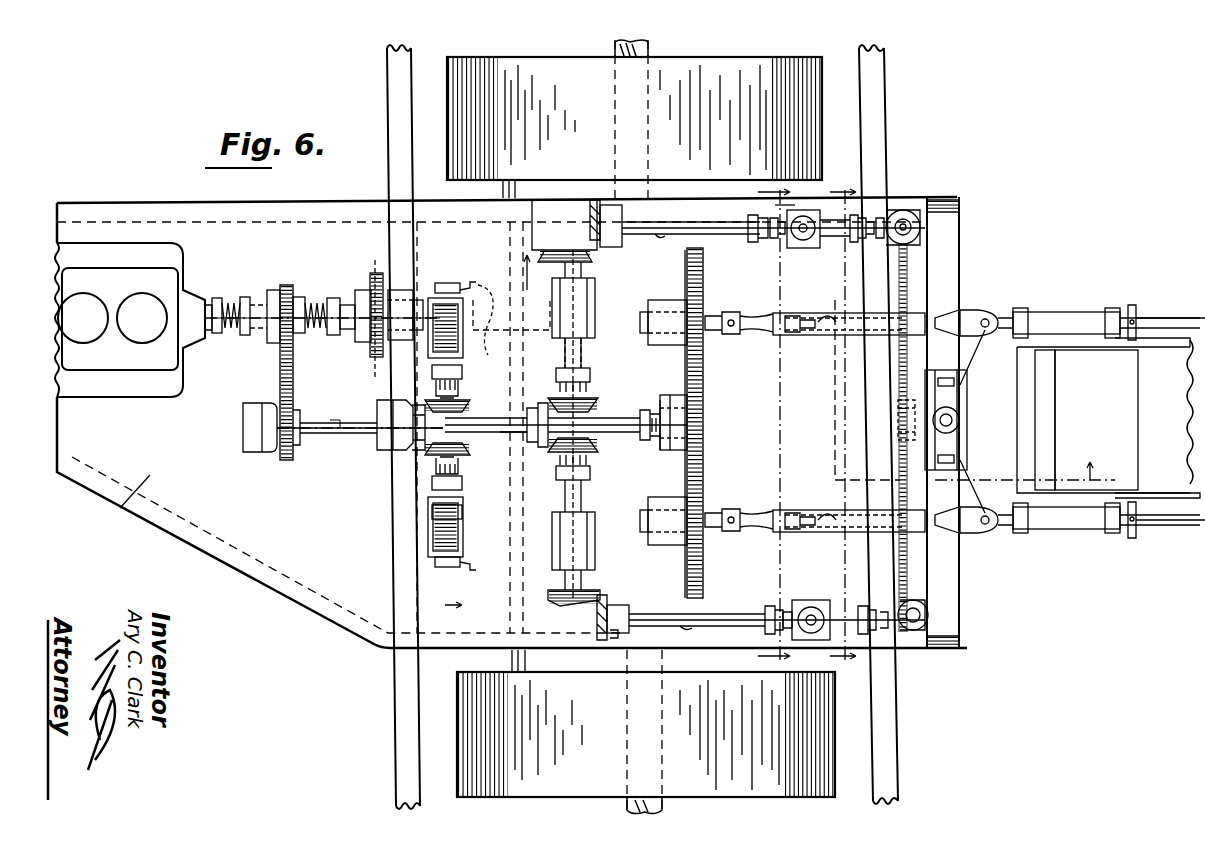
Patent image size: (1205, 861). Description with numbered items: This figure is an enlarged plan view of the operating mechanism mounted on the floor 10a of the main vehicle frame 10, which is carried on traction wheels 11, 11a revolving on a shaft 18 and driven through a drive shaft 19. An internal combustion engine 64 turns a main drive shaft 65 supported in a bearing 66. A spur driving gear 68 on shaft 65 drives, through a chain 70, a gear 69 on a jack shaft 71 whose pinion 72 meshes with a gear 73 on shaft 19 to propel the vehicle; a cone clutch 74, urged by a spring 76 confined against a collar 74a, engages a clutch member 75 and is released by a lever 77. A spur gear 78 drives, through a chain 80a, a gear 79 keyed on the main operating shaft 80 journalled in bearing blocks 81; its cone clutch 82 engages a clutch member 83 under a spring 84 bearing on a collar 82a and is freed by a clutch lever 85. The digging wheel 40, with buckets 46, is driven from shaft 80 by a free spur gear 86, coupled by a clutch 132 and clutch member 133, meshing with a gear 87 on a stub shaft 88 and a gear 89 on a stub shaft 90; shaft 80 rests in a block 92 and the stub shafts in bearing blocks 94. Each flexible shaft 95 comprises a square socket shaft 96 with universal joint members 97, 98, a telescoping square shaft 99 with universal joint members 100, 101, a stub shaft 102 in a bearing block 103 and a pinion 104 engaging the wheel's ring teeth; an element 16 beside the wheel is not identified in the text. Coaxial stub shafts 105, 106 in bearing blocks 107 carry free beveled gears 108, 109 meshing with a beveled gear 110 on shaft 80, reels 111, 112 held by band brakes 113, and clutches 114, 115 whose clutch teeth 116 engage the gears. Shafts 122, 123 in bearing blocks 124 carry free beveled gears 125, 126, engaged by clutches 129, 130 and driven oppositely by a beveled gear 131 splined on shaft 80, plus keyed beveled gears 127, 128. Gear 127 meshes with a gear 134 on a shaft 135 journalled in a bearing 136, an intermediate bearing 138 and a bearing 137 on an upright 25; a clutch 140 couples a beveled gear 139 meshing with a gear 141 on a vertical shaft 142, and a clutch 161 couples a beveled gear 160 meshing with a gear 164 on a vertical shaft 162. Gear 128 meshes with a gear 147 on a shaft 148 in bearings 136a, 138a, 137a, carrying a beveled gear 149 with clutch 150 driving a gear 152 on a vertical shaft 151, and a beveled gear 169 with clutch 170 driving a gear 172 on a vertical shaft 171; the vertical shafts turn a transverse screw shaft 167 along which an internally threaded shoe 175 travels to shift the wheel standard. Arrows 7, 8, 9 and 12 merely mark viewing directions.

The main vehicle frame 10 is at (178, 528).
The floor 10a is at (122, 500).
The traction wheel 11 is at (634, 119).
The traction wheel 11a is at (646, 732).
The shaft 18 is at (650, 50).
The internal combustion engine 64 is at (123, 385).
The main drive shaft 65 is at (208, 330).
The clutch lever 85 is at (218, 300).
The expansile helical spring 84 is at (230, 330).
The cone clutch 82 is at (246, 298).
The collar 82a is at (235, 350).
The complementary clutch member 83 is at (270, 292).
The spur gear 78 is at (286, 284).
The gear 79 is at (284, 458).
The chain 80a is at (283, 388).
The expansile helical spring 76 is at (300, 334).
The lever 77 is at (316, 332).
The cone clutch 74 is at (334, 298).
The collar 74a is at (300, 270).
The complementary clutch member 75 is at (350, 305).
The chain 70 is at (362, 342).
The spur driving gear 68 is at (378, 274).
The gear 69 is at (369, 328).
The bearing 66 is at (400, 290).
The jack shaft 71 is at (417, 300).
The band brake 113 is at (455, 283).
The reel 112 is at (463, 340).
The clutch 115 is at (462, 372).
The stub shaft 106 is at (459, 390).
The beveled gear 109 is at (470, 405).
The beveled gear 108 is at (470, 450).
The stub shaft 105 is at (460, 466).
The clutch 114 is at (462, 484).
The reel 111 is at (463, 523).
The clutch teeth 116 is at (438, 398).
The bearing block 107 is at (430, 320).
The beveled gear 110 is at (420, 455).
The bearing block 81 is at (250, 445).
The main operating shaft 80 is at (318, 435).
The beveled gear 131 is at (540, 447).
The bearing block 124 is at (595, 305).
The shaft 123 is at (582, 345).
The clutch 130 is at (558, 370).
The beveled gear 126 is at (598, 400).
The beveled gear 125 is at (598, 455).
The clutch 129 is at (558, 480).
The shaft 122 is at (582, 492).
The beveled gear 127 is at (560, 600).
The beveled gear 128 is at (564, 239).
The gear 147 is at (592, 205).
The bearing 136a is at (612, 247).
The longitudinally disposed shaft 148 is at (665, 222).
The beveled gear 149 is at (748, 220).
The clutch 150 is at (772, 238).
The vertically disposed shaft 151 is at (803, 248).
The beveled gear 152 is at (790, 240).
The bearing 138a is at (818, 248).
The clutch 170 is at (858, 215).
The beveled gear 169 is at (882, 218).
The beveled gear 172 is at (905, 212).
The vertically disposed shaft 171 is at (908, 232).
The bearing 137a is at (925, 226).
The upright 25 is at (950, 202).
The screw shaft 167 is at (910, 290).
The internally screw threaded shoe 175 is at (898, 425).
The spur gear 86 is at (705, 428).
The stub shaft 88 is at (687, 560).
The gear 87 is at (700, 500).
The gear 89 is at (703, 278).
The stub shaft 90 is at (686, 270).
The block 92 is at (675, 450).
The complementary clutch member 133 is at (665, 402).
The clutch 132 is at (644, 410).
The bearing block 94 is at (655, 302).
The universal joint member 98 is at (725, 335).
The universal joint member 97 is at (744, 332).
The flexible shaft 95 is at (800, 336).
The square socket shaft 96 is at (842, 312).
The square shaft 99 is at (955, 335).
The universal joint member 100 is at (985, 312).
The universal joint member 101 is at (1003, 318).
The stub shaft 102 is at (1062, 312).
The bearing block 103 is at (1095, 312).
The spur gear or pinion 104 is at (1134, 305).
The bucket 46 is at (1085, 405).
The axle 16 is at (1157, 470).
The digging wheel 40 is at (1170, 500).
The gear 134 is at (600, 640).
The bearing 136 is at (622, 606).
The longitudinally disposed shaft 135 is at (672, 626).
The clutch 140 is at (765, 610).
The beveled gear 139 is at (790, 612).
The intermediate bearing 138 is at (830, 604).
The beveled gear 141 is at (808, 608).
The vertically disposed shaft 142 is at (812, 615).
The clutch 161 is at (866, 606).
The vertically disposed shaft 162 is at (922, 608).
The bearing 137 is at (930, 615).
The beveled gear 160 is at (905, 632).
The beveled gear 164 is at (918, 632).
The section line 8 is at (766, 424).
The section line 9 is at (835, 424).
The front dirigible wheel 12 is at (443, 605).
The section line 7 is at (818, 367).
The gear 73 is at (539, 307).
The pinion 72 is at (489, 310).
The drive shaft 19 is at (508, 232).